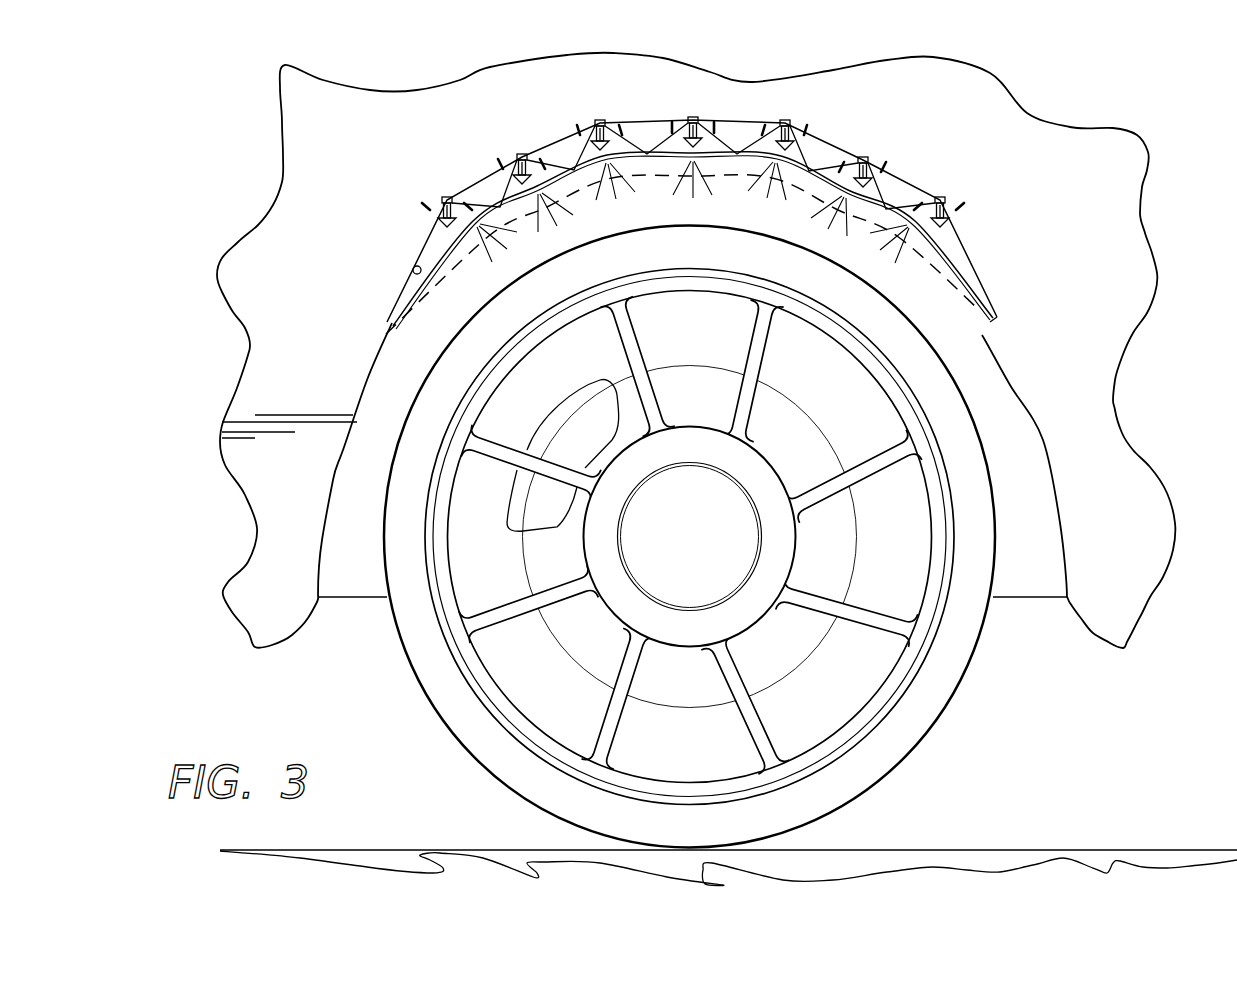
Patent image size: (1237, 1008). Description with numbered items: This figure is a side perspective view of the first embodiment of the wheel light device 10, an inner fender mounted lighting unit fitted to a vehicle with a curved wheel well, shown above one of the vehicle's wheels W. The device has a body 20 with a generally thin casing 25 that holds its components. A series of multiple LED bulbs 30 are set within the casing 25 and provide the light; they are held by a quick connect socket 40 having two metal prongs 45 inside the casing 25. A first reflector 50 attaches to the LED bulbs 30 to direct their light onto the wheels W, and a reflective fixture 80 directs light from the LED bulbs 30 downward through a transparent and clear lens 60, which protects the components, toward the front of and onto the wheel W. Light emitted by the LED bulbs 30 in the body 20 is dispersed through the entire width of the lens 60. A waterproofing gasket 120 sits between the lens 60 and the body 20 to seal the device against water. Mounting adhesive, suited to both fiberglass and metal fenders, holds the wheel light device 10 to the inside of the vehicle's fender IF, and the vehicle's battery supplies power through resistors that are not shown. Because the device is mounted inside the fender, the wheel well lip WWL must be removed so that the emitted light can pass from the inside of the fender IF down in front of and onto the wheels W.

The wheel light device 10 is at (1062, 168).
The body 20 is at (840, 140).
The casing 25 is at (900, 177).
The LED bulbs 30 is at (560, 143).
The quick connect socket 40 is at (947, 198).
The metal prongs 45 is at (600, 120).
The first reflector 50 is at (628, 157).
The transparent and clear lens 60 is at (946, 255).
The reflective fixture 80 is at (977, 303).
The waterproofing gasket 120 is at (392, 322).
The wheel well lip WWL is at (990, 322).
The inside of the vehicle's fender IF is at (1093, 462).
The wheels W is at (898, 745).